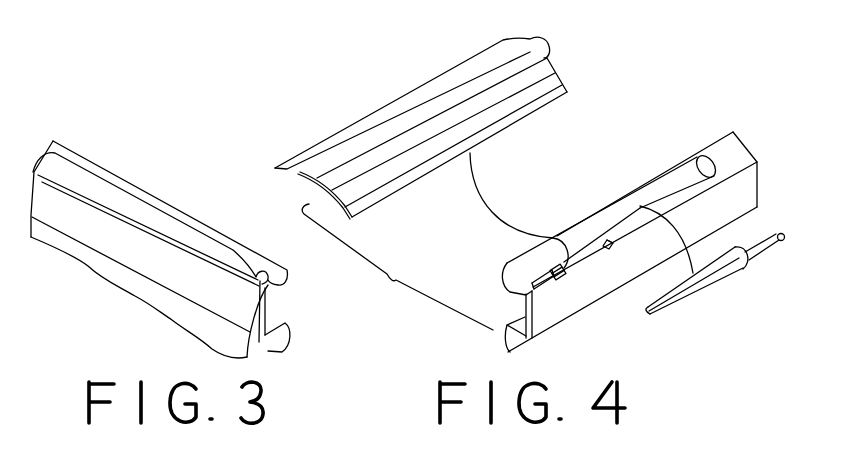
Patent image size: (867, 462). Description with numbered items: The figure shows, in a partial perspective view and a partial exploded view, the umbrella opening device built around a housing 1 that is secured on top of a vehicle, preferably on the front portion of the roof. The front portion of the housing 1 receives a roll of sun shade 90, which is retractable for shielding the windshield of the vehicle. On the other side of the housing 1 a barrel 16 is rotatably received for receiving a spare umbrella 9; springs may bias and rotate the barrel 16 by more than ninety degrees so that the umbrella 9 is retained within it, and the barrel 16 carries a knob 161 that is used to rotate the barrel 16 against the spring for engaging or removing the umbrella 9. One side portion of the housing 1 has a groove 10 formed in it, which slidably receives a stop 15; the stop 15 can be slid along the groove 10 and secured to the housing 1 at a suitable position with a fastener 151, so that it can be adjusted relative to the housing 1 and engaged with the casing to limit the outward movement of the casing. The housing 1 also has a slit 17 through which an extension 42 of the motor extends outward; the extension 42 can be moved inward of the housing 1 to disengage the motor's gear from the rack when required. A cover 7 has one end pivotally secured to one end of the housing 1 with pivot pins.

In FIG. 3, the housing 1 is at (77, 157).
In FIG. 4, the housing 1 is at (629, 221).
In FIG. 4, the cover 7 is at (437, 97).
In FIG. 4, the spare umbrella 9 is at (717, 277).
In FIG. 4, the groove 10 is at (534, 292).
In FIG. 4, the stop 15 is at (546, 267).
In FIG. 4, the barrel 16 is at (652, 195).
In FIG. 4, the slit 17 is at (611, 246).
In FIG. 4, the extension 42 is at (609, 248).
In FIG. 3, the roll of sun shade 90 is at (127, 282).
In FIG. 4, the fastener 151 is at (555, 265).
In FIG. 4, the knob 161 is at (564, 276).